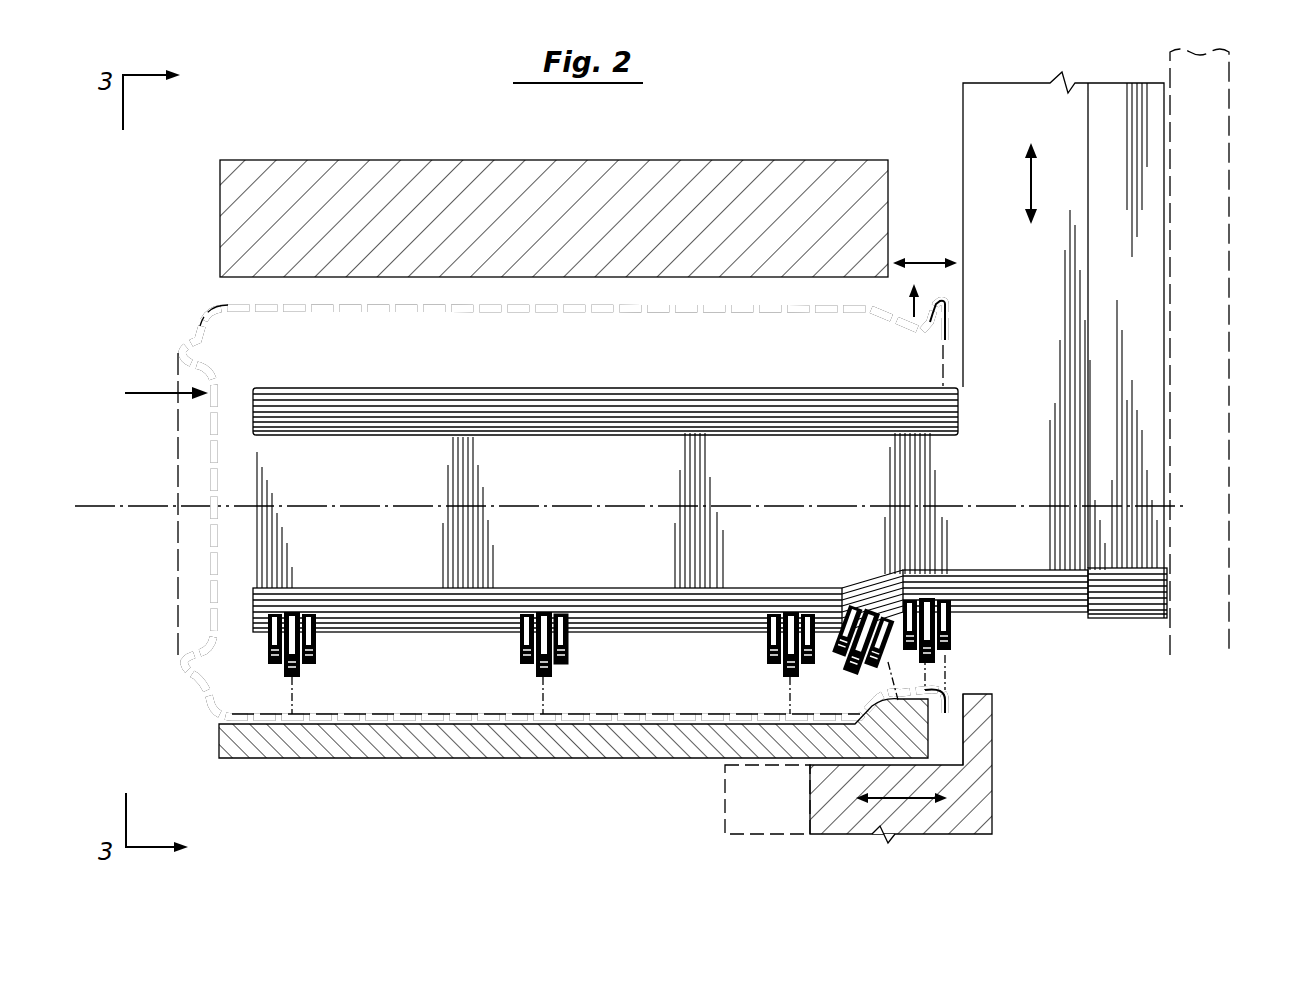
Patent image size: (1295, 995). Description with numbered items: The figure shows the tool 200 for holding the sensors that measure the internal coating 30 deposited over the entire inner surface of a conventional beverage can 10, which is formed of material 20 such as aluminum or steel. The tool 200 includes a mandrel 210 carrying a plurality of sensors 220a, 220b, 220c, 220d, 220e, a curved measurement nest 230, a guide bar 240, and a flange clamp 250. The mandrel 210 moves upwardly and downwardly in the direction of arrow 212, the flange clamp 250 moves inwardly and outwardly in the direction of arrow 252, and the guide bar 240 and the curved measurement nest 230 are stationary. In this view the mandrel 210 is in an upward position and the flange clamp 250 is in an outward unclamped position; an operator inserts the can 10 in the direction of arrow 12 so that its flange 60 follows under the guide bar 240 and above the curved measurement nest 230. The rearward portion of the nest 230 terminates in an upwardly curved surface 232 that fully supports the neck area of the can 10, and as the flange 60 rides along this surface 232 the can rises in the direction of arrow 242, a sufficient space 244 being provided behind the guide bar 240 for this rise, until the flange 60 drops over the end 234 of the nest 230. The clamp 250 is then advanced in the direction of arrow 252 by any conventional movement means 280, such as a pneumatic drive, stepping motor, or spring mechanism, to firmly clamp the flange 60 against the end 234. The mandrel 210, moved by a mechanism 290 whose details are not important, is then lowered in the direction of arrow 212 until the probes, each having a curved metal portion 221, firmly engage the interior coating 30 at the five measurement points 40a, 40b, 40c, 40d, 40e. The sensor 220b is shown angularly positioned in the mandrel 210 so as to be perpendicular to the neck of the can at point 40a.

The beverage can 10 is at (180, 318).
The arrow 12 is at (150, 393).
The material 20 is at (595, 312).
The internal coating 30 is at (656, 714).
The point 40a is at (907, 702).
The point 40b is at (863, 705).
The point 40c is at (789, 714).
The point 40d is at (542, 714).
The point 40e is at (292, 714).
The flange 60 is at (944, 314).
The tool 200 is at (1137, 632).
The mandrel 210 is at (1030, 614).
The arrow 212 is at (1031, 185).
The sensor 220a is at (950, 662).
The sensor 220b is at (883, 662).
The sensor 220c is at (790, 678).
The sensor 220d is at (548, 678).
The sensor 220e is at (300, 678).
The metal portion 221 is at (568, 640).
The curved measurement nest 230 is at (532, 740).
The upwardly curved surface 232 is at (946, 716).
The end 234 is at (965, 700).
The guide bar 240 is at (655, 272).
The arrow 242 is at (897, 322).
The space 244 is at (928, 262).
The flange clamp 250 is at (990, 780).
The arrow 252 is at (907, 792).
The movement means 280 is at (725, 805).
The mechanism 290 is at (1215, 335).